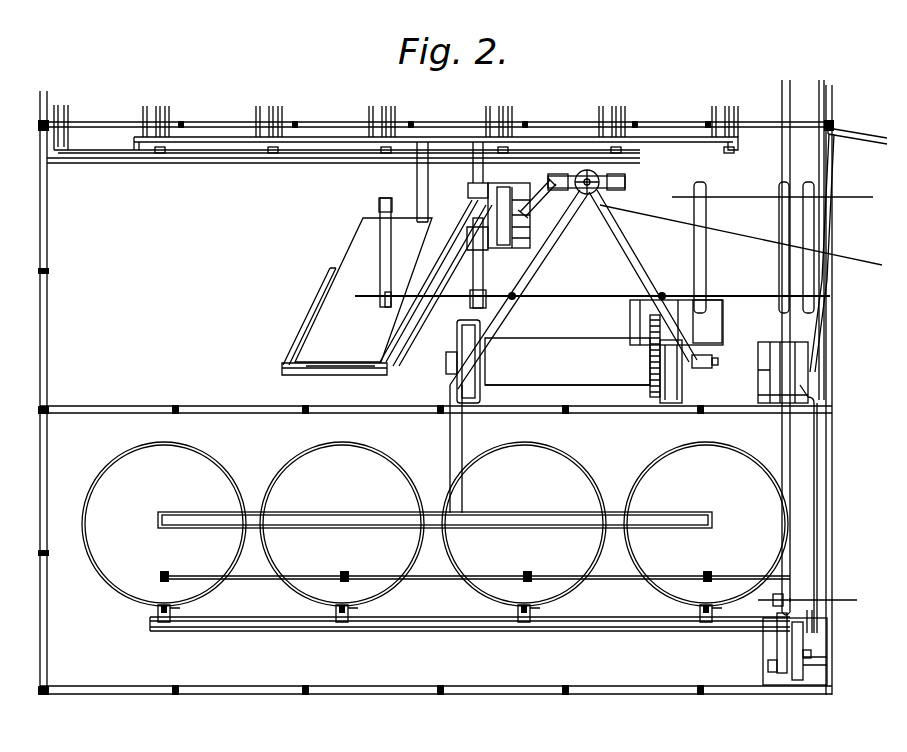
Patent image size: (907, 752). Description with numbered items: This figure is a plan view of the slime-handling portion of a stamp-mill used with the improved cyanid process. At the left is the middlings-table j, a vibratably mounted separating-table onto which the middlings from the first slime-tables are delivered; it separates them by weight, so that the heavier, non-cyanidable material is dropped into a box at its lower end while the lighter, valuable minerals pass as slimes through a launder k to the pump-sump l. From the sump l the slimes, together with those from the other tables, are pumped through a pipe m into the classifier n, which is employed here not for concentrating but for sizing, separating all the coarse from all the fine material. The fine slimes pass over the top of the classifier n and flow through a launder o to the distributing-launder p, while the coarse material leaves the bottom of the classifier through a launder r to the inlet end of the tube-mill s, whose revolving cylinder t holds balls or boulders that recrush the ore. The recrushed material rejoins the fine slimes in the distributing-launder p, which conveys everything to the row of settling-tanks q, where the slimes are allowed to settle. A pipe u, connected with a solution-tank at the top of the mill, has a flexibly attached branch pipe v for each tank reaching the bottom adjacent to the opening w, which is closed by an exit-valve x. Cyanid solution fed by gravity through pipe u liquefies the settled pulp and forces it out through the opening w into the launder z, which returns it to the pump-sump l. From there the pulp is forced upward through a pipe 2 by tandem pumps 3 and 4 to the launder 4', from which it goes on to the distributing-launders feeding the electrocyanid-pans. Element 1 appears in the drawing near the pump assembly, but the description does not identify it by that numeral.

The launder 4' is at (848, 234).
The pump-sump l is at (467, 193).
The launder k is at (300, 347).
The middlings-table j is at (363, 280).
The classifier n is at (625, 182).
The pipe m is at (541, 196).
The launder o is at (562, 258).
The launder r is at (630, 266).
The tube-mill s is at (584, 351).
The revolving cylinder t is at (540, 386).
The tandem pump 4 is at (807, 487).
The distributing-launder p is at (463, 432).
The settling-tank q is at (435, 524).
The pipe u is at (370, 576).
The branch pipe v is at (436, 586).
The exit-valve x is at (419, 611).
The opening w is at (456, 607).
The launder z is at (470, 635).
The pump 1 is at (770, 645).
The pipe 2 is at (812, 633).
The tandem pump 3 is at (808, 657).